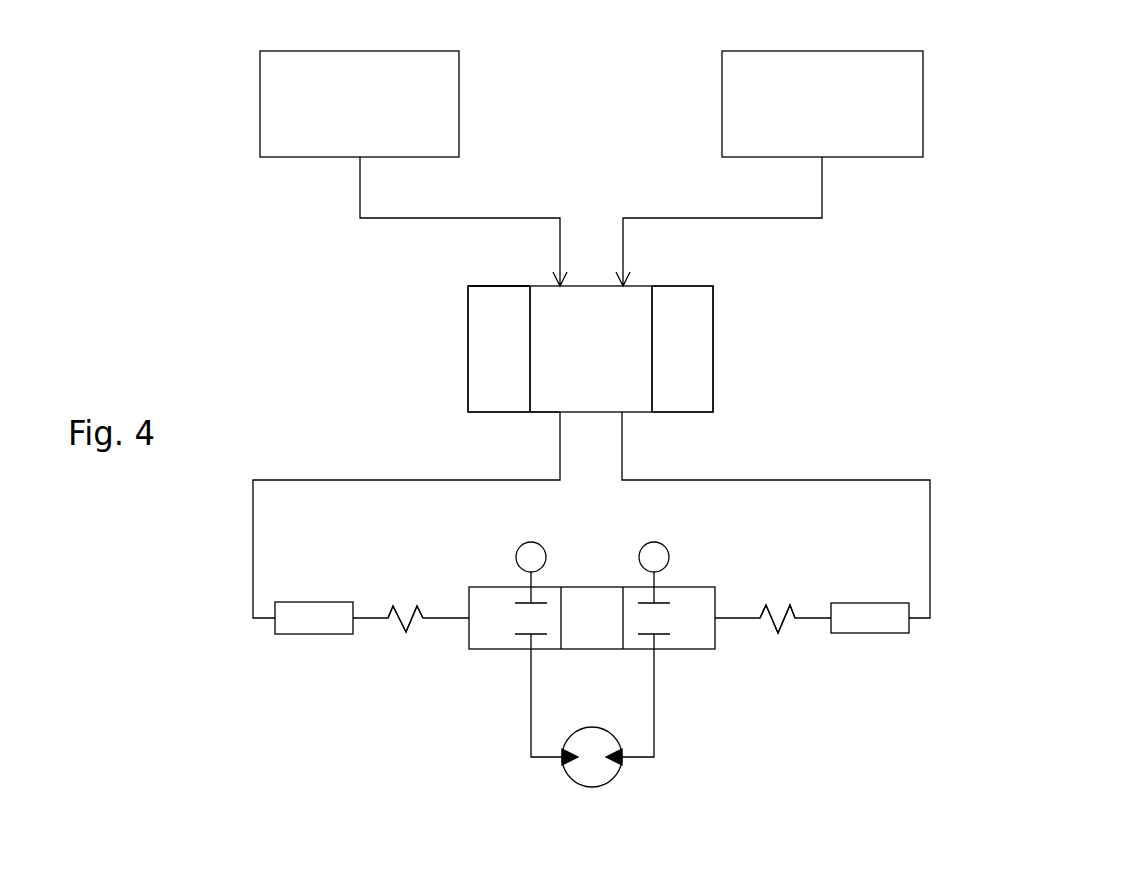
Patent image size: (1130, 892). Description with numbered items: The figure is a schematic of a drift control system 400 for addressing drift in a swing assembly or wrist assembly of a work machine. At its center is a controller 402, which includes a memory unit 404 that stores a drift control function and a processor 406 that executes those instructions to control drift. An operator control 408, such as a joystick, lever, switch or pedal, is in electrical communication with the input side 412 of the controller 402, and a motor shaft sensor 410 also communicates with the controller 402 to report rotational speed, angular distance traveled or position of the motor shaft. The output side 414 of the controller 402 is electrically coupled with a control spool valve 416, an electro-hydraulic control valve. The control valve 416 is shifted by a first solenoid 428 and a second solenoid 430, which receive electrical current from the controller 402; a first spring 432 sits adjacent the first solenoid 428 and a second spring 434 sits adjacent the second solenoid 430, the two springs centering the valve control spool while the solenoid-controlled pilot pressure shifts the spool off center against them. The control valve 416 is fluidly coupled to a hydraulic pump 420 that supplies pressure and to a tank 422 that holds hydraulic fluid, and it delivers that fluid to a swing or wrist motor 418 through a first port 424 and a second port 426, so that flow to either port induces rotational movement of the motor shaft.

The drift control system 400 is at (1037, 144).
The controller 402 is at (745, 298).
The memory unit 404 is at (475, 378).
The processor 406 is at (713, 378).
The operator control 408 is at (459, 118).
The motor shaft sensor 410 is at (722, 86).
The input side 412 is at (512, 276).
The output side 414 is at (540, 424).
The control spool valve 416 is at (715, 666).
The swing or wrist motor 418 is at (592, 788).
The hydraulic pump 420 is at (516, 557).
The tank port 422 is at (669, 557).
The first port 424 is at (548, 775).
The second port 426 is at (642, 771).
The first solenoid 428 is at (263, 634).
The second solenoid 430 is at (909, 632).
The first spring 432 is at (397, 622).
The second spring 434 is at (785, 622).